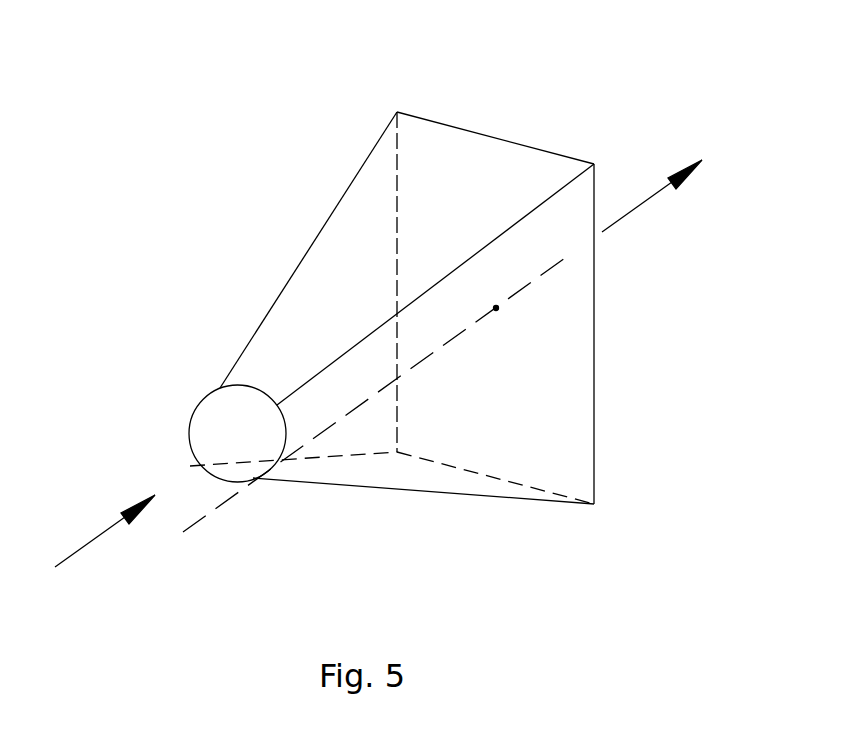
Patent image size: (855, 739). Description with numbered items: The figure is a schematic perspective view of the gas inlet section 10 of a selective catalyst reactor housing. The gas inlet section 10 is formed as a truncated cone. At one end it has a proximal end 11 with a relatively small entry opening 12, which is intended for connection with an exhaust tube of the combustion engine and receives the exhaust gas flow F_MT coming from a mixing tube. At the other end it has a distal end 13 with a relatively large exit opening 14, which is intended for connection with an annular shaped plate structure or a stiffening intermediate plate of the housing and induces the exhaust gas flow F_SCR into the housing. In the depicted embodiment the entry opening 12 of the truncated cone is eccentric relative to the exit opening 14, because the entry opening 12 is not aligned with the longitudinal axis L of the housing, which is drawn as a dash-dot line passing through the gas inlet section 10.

The gas inlet section 10 is at (525, 92).
The proximal end 11 is at (198, 402).
The entry opening 12 is at (293, 437).
The distal end 13 is at (594, 408).
The exit opening 14 is at (548, 390).